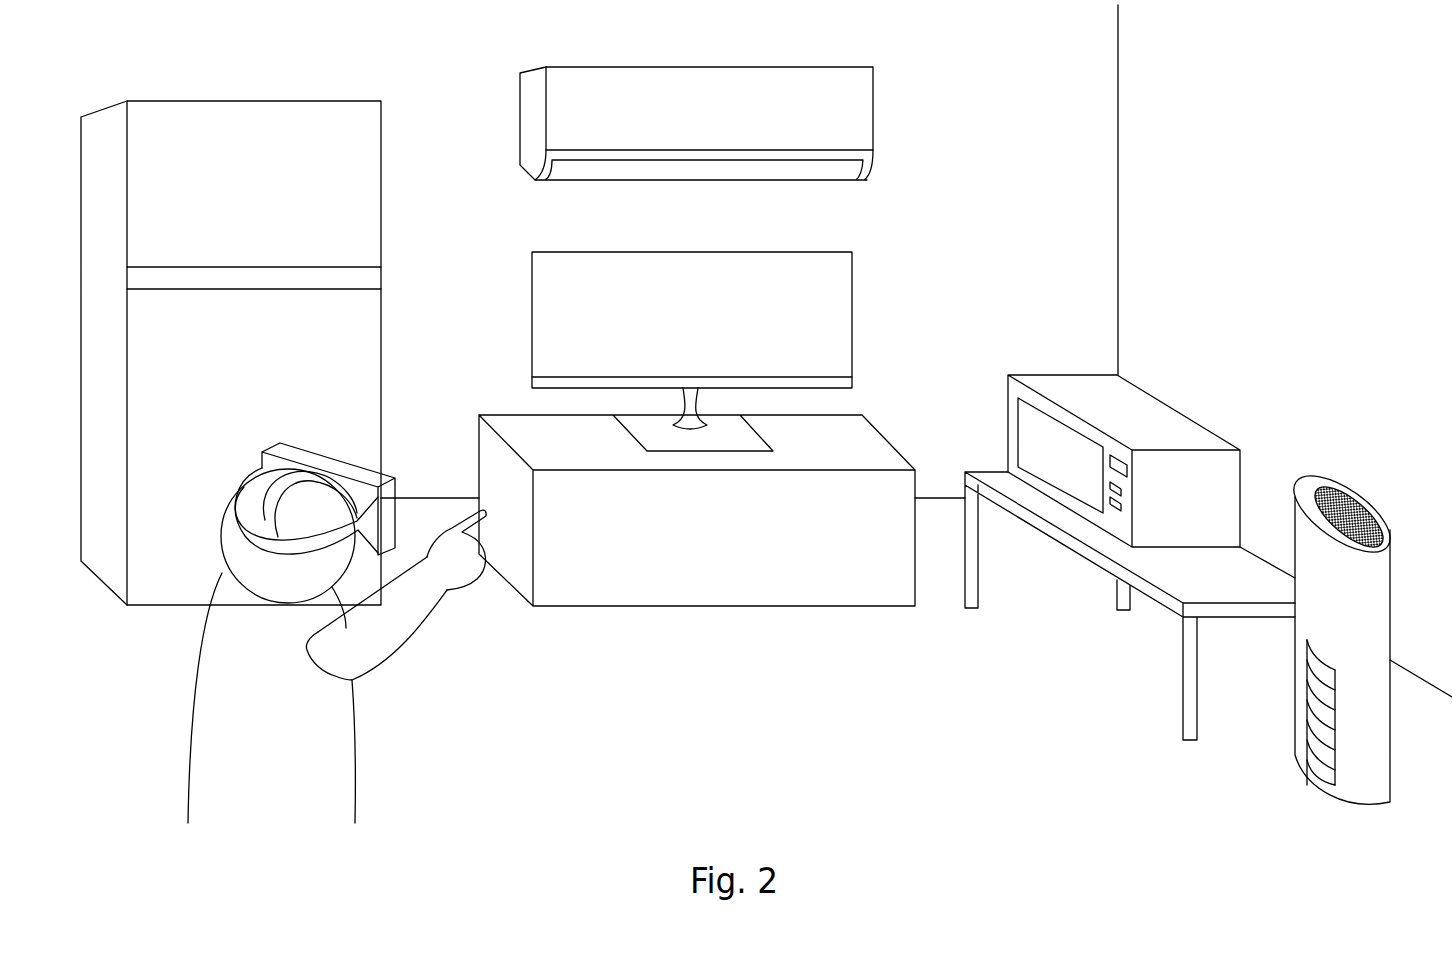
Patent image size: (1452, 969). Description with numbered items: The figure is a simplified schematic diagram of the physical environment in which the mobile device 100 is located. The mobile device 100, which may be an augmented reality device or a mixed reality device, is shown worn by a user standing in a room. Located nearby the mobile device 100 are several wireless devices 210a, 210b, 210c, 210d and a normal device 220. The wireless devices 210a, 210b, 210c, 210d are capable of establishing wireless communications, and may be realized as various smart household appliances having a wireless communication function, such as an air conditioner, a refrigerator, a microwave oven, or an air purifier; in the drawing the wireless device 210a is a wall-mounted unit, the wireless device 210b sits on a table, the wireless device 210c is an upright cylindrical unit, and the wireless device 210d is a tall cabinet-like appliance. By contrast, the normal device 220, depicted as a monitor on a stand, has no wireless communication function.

The mobile device 100 is at (301, 443).
The wireless device 210a is at (518, 100).
The wireless device 210b is at (1148, 388).
The wireless device 210c is at (1340, 482).
The wireless device 210d is at (223, 100).
The normal device 220 is at (532, 312).